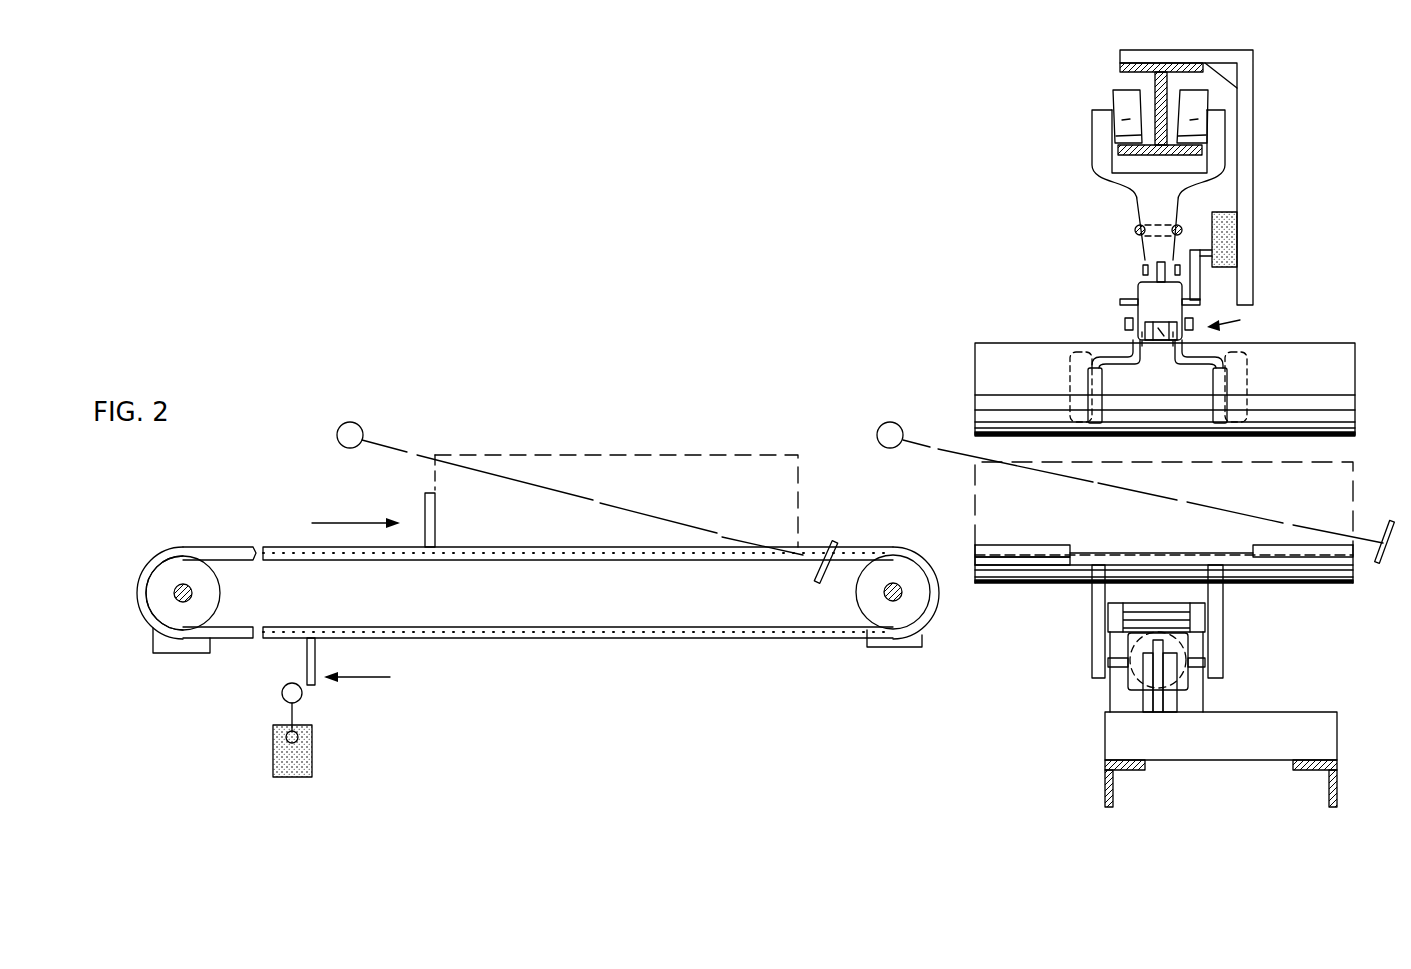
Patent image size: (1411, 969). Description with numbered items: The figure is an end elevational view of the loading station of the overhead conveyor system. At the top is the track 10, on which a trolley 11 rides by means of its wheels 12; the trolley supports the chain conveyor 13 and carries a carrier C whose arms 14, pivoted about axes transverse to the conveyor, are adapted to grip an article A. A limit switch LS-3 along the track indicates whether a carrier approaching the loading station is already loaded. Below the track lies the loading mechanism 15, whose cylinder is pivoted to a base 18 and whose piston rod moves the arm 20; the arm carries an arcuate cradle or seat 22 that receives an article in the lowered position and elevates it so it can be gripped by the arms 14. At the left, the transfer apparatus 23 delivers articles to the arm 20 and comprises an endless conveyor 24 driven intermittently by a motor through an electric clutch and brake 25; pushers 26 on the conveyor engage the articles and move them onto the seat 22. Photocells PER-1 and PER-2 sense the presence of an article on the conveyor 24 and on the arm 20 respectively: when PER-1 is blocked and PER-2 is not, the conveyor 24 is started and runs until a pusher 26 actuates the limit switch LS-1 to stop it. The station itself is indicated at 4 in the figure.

The loading station 4 is at (975, 495).
The track 10 is at (1120, 66).
The trolley 11 is at (1105, 182).
The wheels 12 is at (1113, 100).
The chain conveyor 13 is at (1134, 234).
The arms 14 is at (1113, 353).
The loading mechanism 15 is at (1102, 695).
The base 18 is at (1278, 712).
The arm 20 is at (1321, 588).
The arcuate cradle or seat 22 is at (1022, 580).
The transfer apparatus 23 is at (521, 642).
The endless conveyor 24 is at (660, 636).
The electric clutch and brake 25 is at (180, 618).
The pushers 26 is at (425, 510).
The article A is at (556, 456).
The carrier C is at (1235, 322).
The limit switch LS-1 is at (312, 750).
The limit switch LS-3 is at (1228, 242).
The photocell PER-1 is at (561, 470).
The photocell PER-2 is at (914, 409).